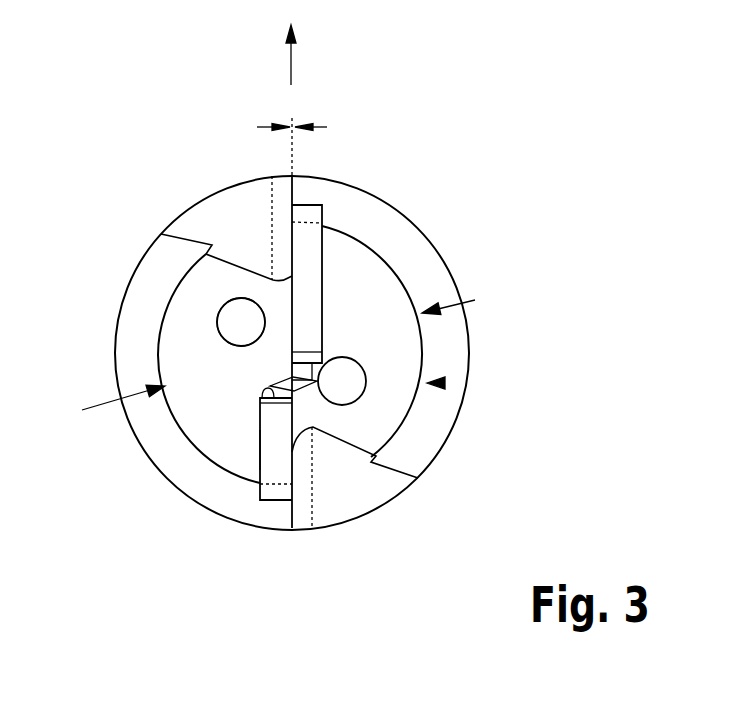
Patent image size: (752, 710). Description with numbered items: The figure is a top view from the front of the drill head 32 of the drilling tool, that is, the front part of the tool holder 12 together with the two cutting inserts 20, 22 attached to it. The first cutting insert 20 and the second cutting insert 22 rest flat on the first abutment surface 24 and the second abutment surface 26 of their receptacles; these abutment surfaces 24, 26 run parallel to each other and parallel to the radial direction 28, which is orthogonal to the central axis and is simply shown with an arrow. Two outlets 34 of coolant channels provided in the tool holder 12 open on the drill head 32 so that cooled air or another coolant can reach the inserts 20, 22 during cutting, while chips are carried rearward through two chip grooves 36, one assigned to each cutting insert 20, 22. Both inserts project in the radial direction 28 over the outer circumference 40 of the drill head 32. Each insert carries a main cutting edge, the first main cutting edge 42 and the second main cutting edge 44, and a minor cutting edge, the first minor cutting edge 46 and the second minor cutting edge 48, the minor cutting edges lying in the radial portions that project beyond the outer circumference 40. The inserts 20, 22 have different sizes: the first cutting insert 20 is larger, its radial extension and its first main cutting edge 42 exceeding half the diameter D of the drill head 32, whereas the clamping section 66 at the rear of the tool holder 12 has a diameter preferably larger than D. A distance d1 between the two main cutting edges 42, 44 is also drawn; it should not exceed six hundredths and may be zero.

The tool holder 12 is at (293, 353).
The first cutting insert 20 is at (305, 238).
The second cutting insert 22 is at (273, 500).
The first abutment surface 24 is at (318, 300).
The second abutment surface 26 is at (258, 458).
The radial direction 28 is at (292, 62).
The drill head 32 is at (445, 383).
The coolant outlets 34 is at (232, 323).
The chip grooves 36 is at (218, 215).
The outer circumference 40 is at (163, 348).
The first main cutting edge 42 is at (292, 333).
The second main cutting edge 44 is at (291, 444).
The first minor cutting edge 46 is at (290, 203).
The second minor cutting edge 48 is at (292, 500).
The clamping section 66 is at (130, 283).
The diameter D is at (121, 415).
The distance d1 is at (300, 111).